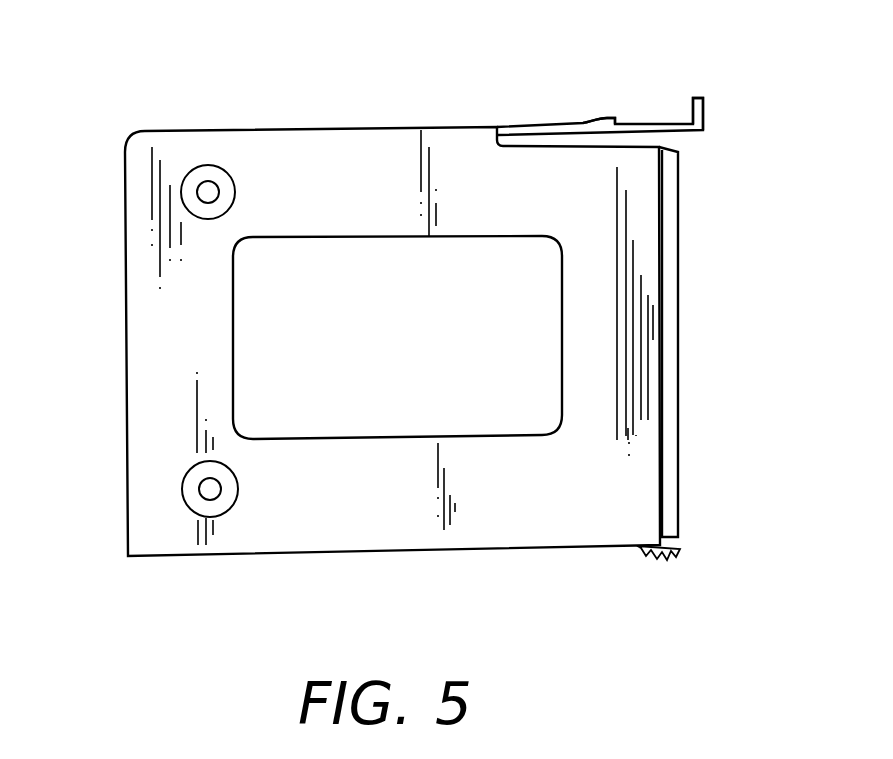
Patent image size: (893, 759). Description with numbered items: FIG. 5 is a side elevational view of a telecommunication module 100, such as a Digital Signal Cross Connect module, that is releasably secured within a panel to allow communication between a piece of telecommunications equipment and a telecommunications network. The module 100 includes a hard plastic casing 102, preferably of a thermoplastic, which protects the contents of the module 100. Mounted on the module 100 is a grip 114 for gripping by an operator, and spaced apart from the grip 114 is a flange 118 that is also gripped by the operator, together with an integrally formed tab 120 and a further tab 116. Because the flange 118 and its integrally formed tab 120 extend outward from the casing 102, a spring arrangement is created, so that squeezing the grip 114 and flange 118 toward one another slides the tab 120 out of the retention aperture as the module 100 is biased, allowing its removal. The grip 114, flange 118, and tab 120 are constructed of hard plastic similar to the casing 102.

The telecommunication module 100 is at (202, 95).
The casing 102 is at (393, 357).
The grip 114 is at (668, 560).
The tab 116 is at (675, 73).
The flange 118 is at (706, 112).
The tab 120 is at (603, 113).